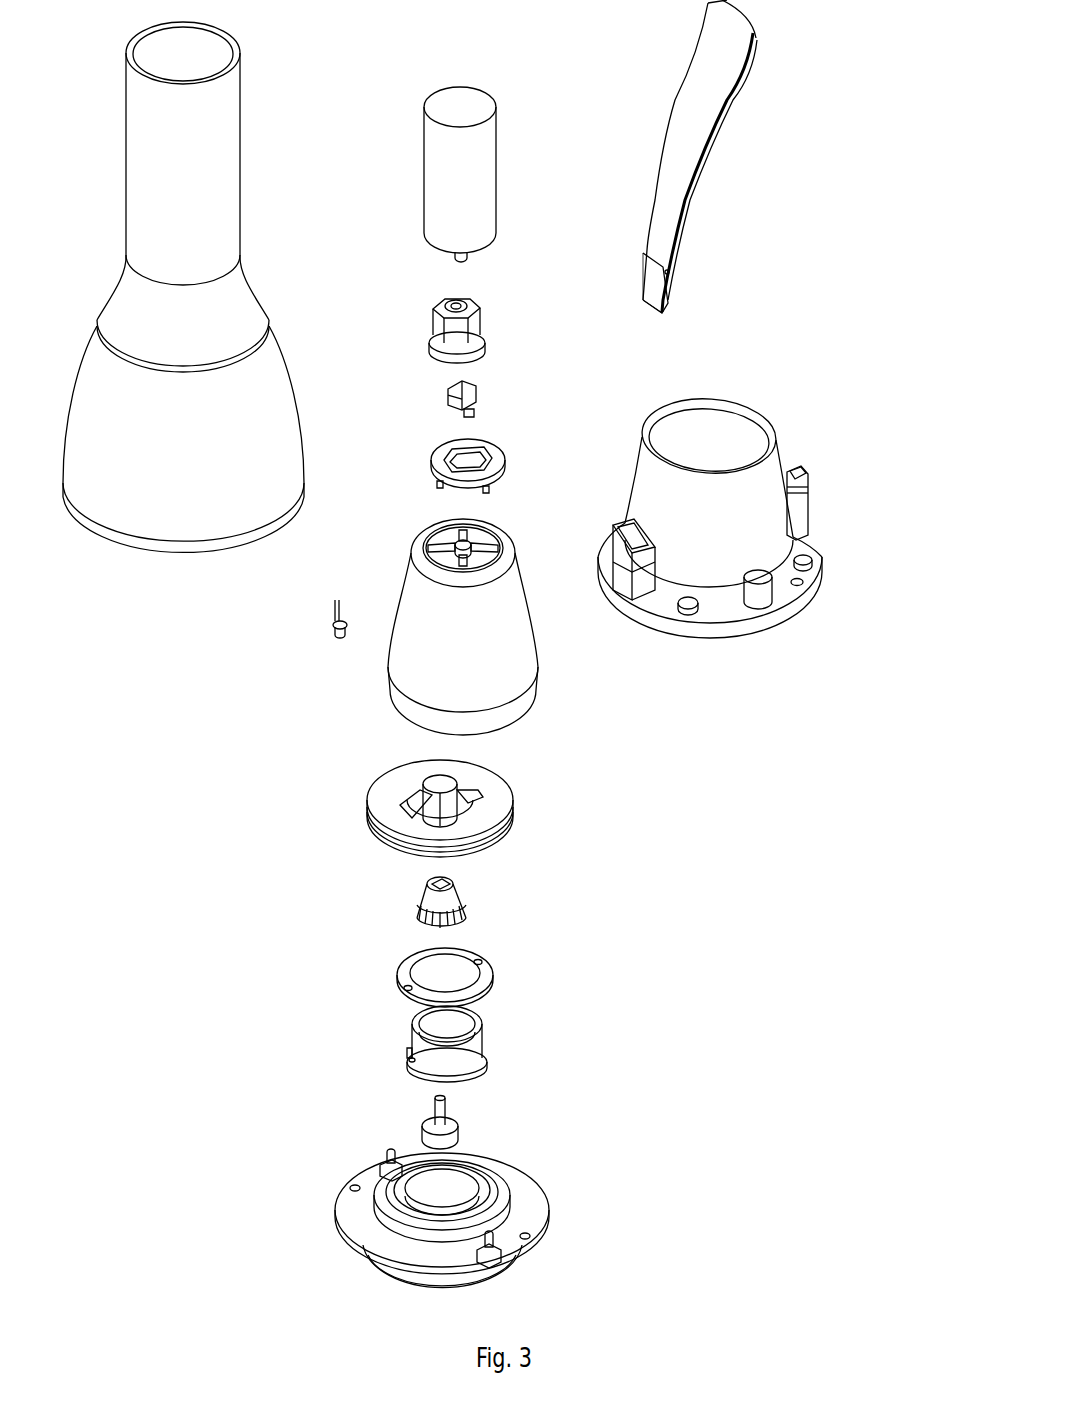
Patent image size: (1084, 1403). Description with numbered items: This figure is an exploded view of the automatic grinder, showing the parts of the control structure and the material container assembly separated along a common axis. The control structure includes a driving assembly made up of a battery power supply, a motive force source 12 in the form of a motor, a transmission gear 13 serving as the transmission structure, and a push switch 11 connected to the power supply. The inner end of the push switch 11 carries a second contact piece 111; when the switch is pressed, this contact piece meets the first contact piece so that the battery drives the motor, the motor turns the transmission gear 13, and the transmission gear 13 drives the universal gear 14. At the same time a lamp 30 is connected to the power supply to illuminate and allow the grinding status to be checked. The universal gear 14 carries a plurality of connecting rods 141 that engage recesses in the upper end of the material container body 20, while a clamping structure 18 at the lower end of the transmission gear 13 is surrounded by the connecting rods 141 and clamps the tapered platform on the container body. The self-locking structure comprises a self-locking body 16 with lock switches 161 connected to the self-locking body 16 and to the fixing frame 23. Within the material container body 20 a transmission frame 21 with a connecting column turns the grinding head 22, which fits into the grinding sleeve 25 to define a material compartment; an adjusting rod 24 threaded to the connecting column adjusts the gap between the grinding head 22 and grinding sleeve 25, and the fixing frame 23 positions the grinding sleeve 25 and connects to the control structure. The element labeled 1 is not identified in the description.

The housing 1 is at (223, 110).
The switch 11 is at (687, 126).
The second contact piece 111 is at (648, 295).
The motive force source 12 is at (450, 143).
The transmission gear 13 is at (472, 323).
The universal gear 14 is at (492, 460).
The connecting rods 141 is at (492, 484).
The self-locking body 16 is at (748, 497).
The lock switches 161 is at (798, 522).
The clamping structure 18 is at (478, 392).
The material container body 20 is at (410, 605).
The transmission frame 21 is at (477, 827).
The grinding head 22 is at (447, 900).
The fixing frame 23 is at (527, 1222).
The adjusting rod 24 is at (443, 1137).
The grinding sleeve 25 is at (473, 1050).
The lamp 30 is at (331, 622).